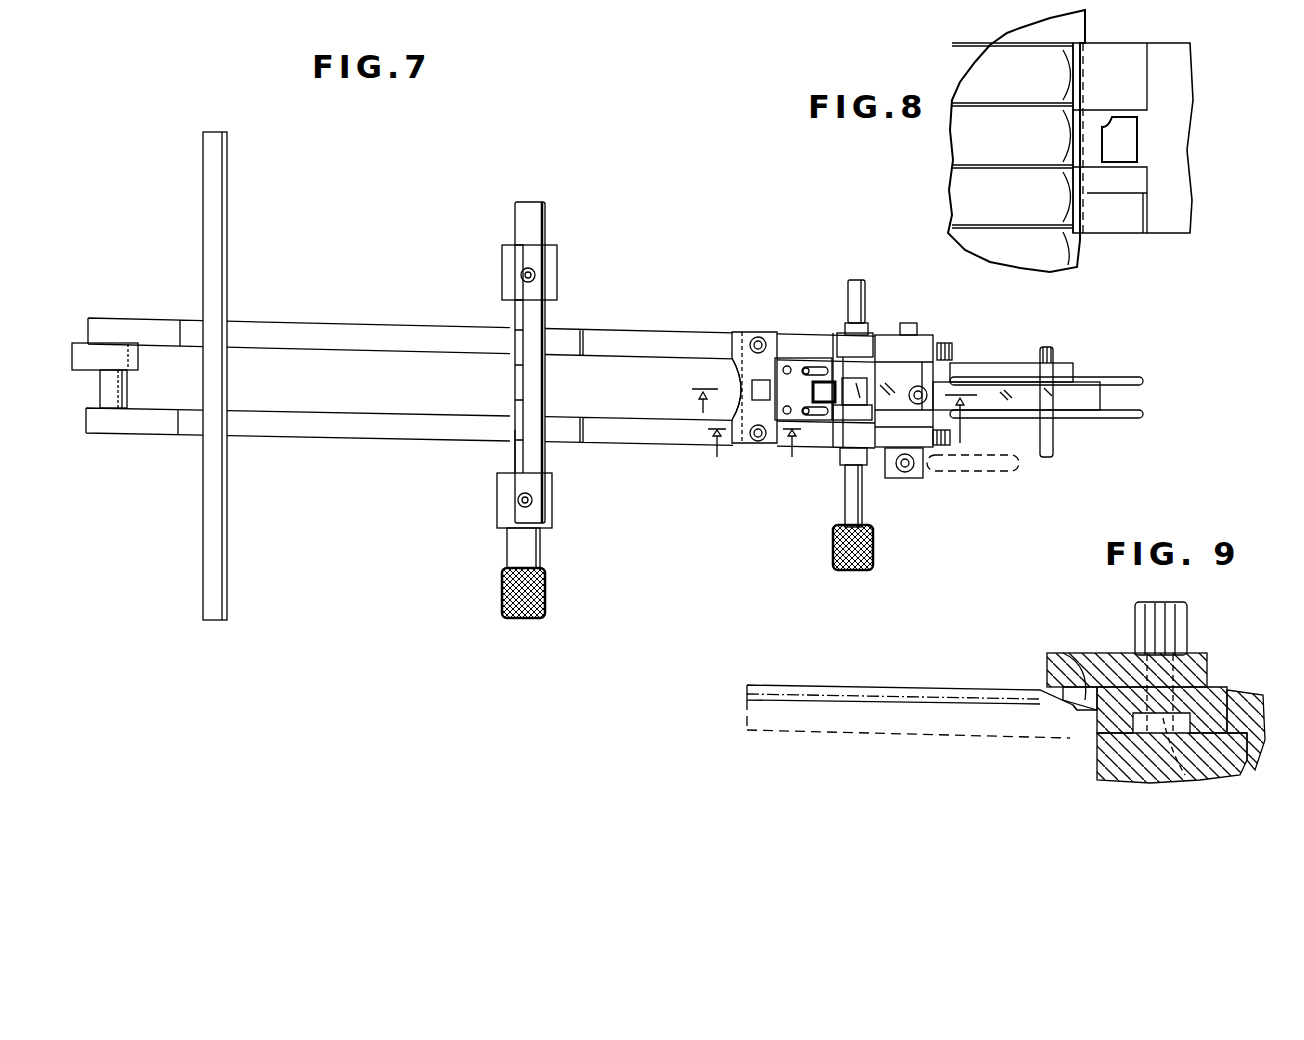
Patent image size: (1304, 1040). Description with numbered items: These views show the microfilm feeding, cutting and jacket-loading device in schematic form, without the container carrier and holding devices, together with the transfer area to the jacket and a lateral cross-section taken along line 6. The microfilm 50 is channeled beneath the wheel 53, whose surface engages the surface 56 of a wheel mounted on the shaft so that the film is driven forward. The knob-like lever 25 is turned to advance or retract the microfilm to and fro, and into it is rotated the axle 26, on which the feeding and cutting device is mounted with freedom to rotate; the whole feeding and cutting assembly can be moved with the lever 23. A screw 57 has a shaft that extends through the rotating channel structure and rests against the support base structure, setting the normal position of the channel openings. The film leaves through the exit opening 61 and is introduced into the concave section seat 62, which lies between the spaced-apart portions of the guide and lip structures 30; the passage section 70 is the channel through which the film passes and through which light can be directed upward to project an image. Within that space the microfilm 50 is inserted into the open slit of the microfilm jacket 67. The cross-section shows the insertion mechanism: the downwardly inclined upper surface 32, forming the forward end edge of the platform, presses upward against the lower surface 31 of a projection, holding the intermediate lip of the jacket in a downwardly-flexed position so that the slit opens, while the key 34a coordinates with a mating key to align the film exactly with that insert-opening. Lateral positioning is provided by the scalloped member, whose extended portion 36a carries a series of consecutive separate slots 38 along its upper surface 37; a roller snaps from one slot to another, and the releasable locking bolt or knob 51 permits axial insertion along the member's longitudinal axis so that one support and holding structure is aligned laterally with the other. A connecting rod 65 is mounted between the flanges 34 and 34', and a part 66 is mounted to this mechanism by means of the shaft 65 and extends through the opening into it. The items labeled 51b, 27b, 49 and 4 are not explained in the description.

In FIG. 7, the flange 34 is at (480, 455).
In FIG. 7, the flange 34' is at (481, 320).
In FIG. 7, the part 66 is at (90, 352).
In FIG. 7, the connecting rod 65 is at (112, 391).
In FIG. 7, the upper surface 37 is at (527, 456).
In FIG. 7, the extended portion 36a is at (517, 450).
In FIG. 7, the slots 38 is at (517, 457).
In FIG. 7, the clamp block 51b is at (544, 511).
In FIG. 7, the releasable locking bolt 51 is at (546, 594).
In FIG. 7, the passage section 70 is at (745, 378).
In FIG. 8, the passage section 70 is at (1108, 121).
In FIG. 7, the exit opening 61 is at (760, 378).
In FIG. 8, the exit opening 61 is at (1134, 143).
In FIG. 7, the section seat 62 is at (758, 443).
In FIG. 7, the mounting plate 27b is at (833, 383).
In FIG. 7, the wheel 53 is at (853, 390).
In FIG. 7, the surface 56 is at (866, 382).
In FIG. 7, the screw 57 is at (944, 343).
In FIG. 7, the microfilm 50 is at (937, 386).
In FIG. 7, the guide plate 49 is at (1093, 380).
In FIG. 7, the section line 4 is at (834, 411).
In FIG. 7, the section line 6— 6 is at (754, 455).
In FIG. 7, the axle 26 is at (850, 498).
In FIG. 7, the lever 25 is at (848, 572).
In FIG. 7, the lever 23 is at (940, 472).
In FIG. 8, the guide and lip structures 30 is at (1122, 228).
In FIG. 9, the guide and lip structures 30 is at (1207, 666).
In FIG. 9, the microfilm jacket 67 is at (897, 681).
In FIG. 9, the lower surface 31 is at (1086, 663).
In FIG. 9, the upper surface 32 is at (1085, 715).
In FIG. 9, the key 34a is at (1186, 776).